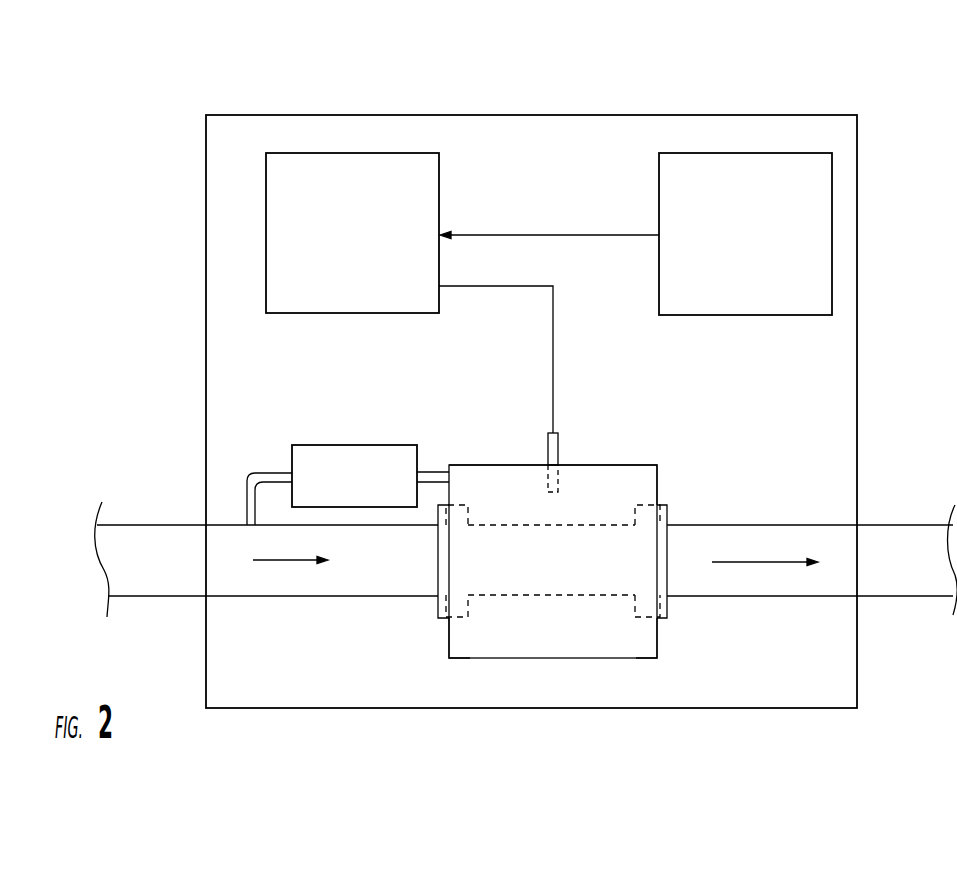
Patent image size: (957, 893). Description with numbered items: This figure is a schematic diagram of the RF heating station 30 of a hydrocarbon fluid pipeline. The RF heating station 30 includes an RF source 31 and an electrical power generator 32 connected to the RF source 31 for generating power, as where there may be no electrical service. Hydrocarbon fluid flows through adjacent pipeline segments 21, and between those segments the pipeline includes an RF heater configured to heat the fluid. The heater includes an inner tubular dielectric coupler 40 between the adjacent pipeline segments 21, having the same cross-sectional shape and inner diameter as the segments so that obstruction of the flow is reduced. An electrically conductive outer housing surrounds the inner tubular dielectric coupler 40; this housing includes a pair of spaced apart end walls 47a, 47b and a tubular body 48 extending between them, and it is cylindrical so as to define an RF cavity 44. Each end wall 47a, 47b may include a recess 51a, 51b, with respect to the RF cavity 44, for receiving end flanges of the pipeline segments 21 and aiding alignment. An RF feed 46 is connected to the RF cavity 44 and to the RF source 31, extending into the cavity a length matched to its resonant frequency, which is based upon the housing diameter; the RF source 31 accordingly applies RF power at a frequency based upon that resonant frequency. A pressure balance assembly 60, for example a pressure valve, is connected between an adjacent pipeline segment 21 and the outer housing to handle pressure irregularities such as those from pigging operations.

The pipeline segment 21 is at (146, 540).
The RF heating station 30 is at (215, 92).
The RF source 31 is at (277, 264).
The electrical power generator 32 is at (823, 236).
The inner tubular dielectric coupler 40 is at (698, 460).
The RF cavity 44 is at (641, 490).
The RF feed 46 is at (558, 444).
The tubular body 48 is at (628, 462).
The recess 51a is at (438, 553).
The recess 51b is at (667, 518).
The end wall 47a is at (447, 645).
The end wall 47b is at (667, 607).
The pressure balance assembly 60 is at (330, 445).